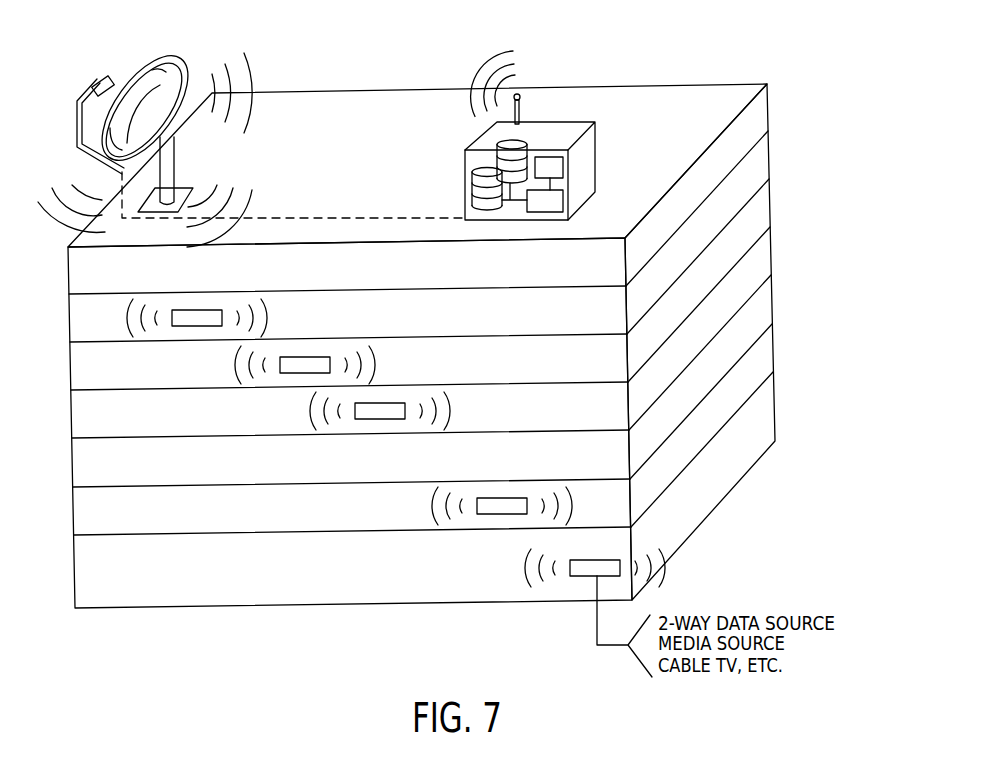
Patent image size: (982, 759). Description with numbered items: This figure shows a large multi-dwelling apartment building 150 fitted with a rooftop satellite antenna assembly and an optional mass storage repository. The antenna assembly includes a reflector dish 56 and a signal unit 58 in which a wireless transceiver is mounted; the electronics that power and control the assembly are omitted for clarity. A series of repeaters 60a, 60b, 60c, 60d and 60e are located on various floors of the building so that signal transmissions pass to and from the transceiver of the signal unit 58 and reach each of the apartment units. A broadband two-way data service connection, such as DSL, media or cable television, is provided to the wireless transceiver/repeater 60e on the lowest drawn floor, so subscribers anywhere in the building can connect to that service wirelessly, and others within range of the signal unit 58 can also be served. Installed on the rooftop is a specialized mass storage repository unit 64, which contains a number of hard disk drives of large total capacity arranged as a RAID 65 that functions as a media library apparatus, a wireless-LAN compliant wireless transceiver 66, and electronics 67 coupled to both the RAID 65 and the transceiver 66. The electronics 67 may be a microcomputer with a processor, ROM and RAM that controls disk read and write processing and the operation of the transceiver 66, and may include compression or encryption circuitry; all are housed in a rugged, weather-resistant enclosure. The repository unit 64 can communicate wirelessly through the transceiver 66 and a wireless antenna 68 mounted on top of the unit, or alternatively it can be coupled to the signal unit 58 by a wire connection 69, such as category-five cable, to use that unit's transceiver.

The building 150 is at (640, 83).
The reflector dish 56 is at (165, 53).
The signal unit 58 is at (108, 78).
The wire connection 69 is at (343, 216).
The mass storage repository unit 64 is at (597, 157).
The RAID 65 is at (483, 169).
The wireless transceiver 66 is at (550, 167).
The electronics 67 is at (555, 200).
The wireless antenna 68 is at (520, 105).
The repeater 60a is at (199, 310).
The repeater 60b is at (308, 357).
The repeater 60c is at (388, 403).
The repeater 60d is at (500, 498).
The wireless transceiver/repeater 60e is at (583, 560).